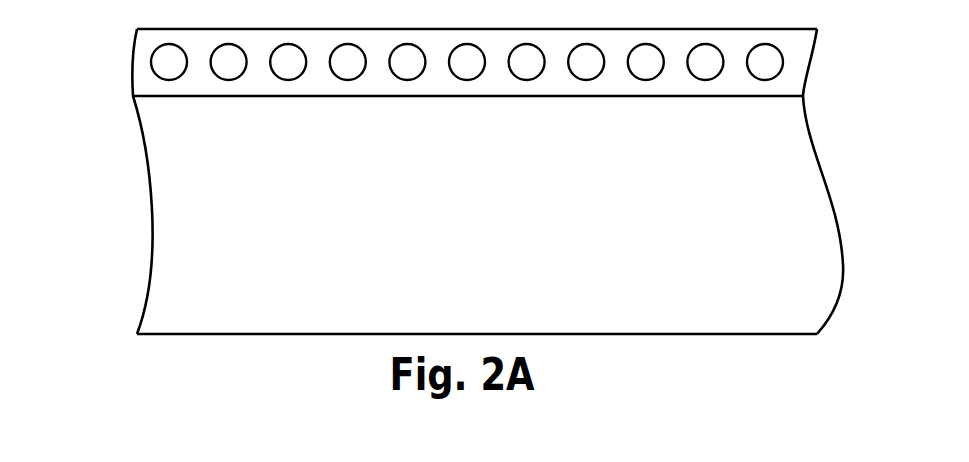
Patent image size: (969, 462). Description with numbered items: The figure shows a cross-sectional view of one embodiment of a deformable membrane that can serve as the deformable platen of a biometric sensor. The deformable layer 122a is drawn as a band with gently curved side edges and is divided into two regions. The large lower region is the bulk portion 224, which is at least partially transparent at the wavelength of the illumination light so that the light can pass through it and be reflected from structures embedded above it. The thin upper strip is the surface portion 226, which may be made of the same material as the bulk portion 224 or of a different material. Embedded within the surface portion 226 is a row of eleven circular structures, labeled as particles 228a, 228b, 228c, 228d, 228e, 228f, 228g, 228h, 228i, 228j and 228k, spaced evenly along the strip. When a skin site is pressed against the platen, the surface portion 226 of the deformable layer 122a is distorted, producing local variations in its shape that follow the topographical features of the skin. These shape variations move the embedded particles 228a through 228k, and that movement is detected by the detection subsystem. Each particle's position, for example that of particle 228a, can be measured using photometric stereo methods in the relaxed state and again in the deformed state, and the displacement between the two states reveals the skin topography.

The deformable layer 122a is at (130, 181).
The bulk portion 224 is at (452, 190).
The surface portion 226 is at (620, 34).
The embedded structure (particle) 228a is at (178, 77).
The embedded structure (particle) 228b is at (238, 77).
The embedded structure (particle) 228c is at (297, 77).
The embedded structure (particle) 228d is at (357, 77).
The embedded structure (particle) 228e is at (416, 77).
The embedded structure (particle) 228f is at (476, 77).
The embedded structure (particle) 228g is at (536, 77).
The embedded structure (particle) 228h is at (595, 77).
The embedded structure (particle) 228i is at (655, 77).
The embedded structure (particle) 228j is at (714, 77).
The embedded structure (particle) 228k is at (774, 77).